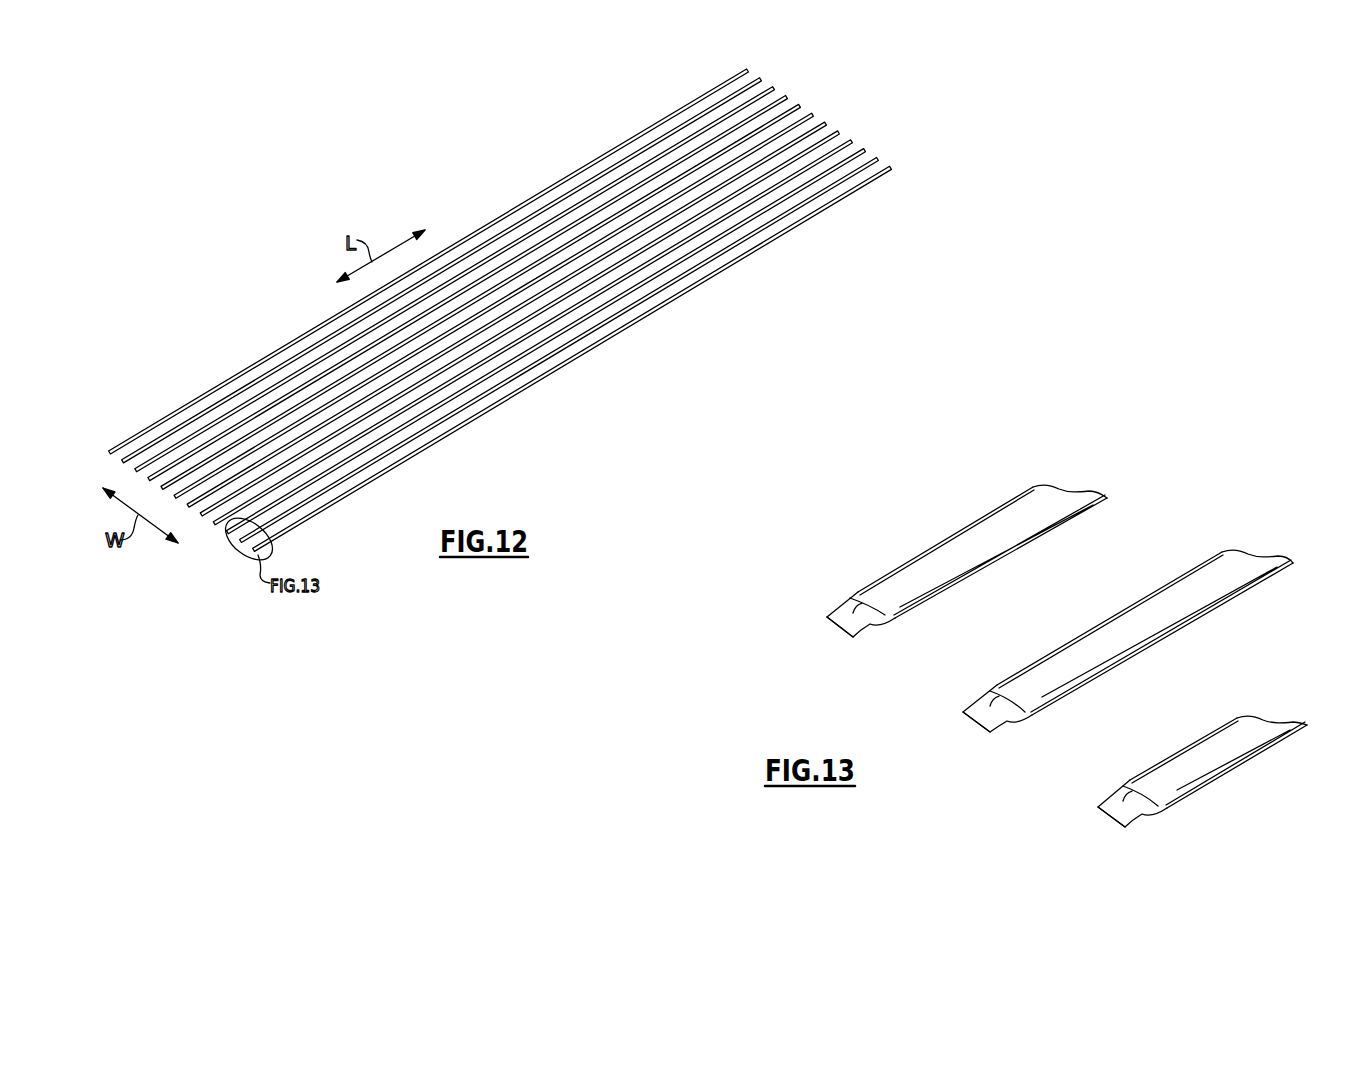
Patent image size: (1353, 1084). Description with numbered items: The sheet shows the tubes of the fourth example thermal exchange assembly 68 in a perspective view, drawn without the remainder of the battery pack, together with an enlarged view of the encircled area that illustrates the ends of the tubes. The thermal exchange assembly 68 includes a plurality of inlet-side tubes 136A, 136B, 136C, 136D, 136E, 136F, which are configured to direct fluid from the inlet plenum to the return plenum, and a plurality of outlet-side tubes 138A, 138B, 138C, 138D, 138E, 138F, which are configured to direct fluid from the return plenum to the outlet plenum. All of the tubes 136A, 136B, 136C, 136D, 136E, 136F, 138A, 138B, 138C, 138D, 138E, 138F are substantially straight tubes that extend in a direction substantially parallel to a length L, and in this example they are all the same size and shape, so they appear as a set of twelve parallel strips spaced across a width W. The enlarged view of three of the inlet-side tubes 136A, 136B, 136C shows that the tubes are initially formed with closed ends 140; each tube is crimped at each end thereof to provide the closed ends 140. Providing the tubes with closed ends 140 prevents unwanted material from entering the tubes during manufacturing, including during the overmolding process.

In FIG. 12, the thermal exchange assembly 68 is at (236, 334).
In FIG. 12, the inlet-side tube 136A is at (486, 413).
In FIG. 13, the inlet-side tube 136A is at (1220, 727).
In FIG. 12, the inlet-side tube 136B is at (538, 367).
In FIG. 13, the inlet-side tube 136B is at (1150, 593).
In FIG. 12, the inlet-side tube 136C is at (557, 338).
In FIG. 13, the inlet-side tube 136C is at (953, 535).
In FIG. 12, the inlet-side tube 136D is at (572, 312).
In FIG. 12, the inlet-side tube 136E is at (598, 278).
In FIG. 12, the inlet-side tube 136F is at (635, 238).
In FIG. 12, the outlet-side tube 138A is at (538, 280).
In FIG. 12, the outlet-side tube 138B is at (555, 253).
In FIG. 12, the outlet-side tube 138C is at (593, 213).
In FIG. 12, the outlet-side tube 138D is at (630, 172).
In FIG. 12, the outlet-side tube 138E is at (672, 130).
In FIG. 12, the outlet-side tube 138F is at (727, 83).
In FIG. 13, the closed end 140 is at (835, 627).